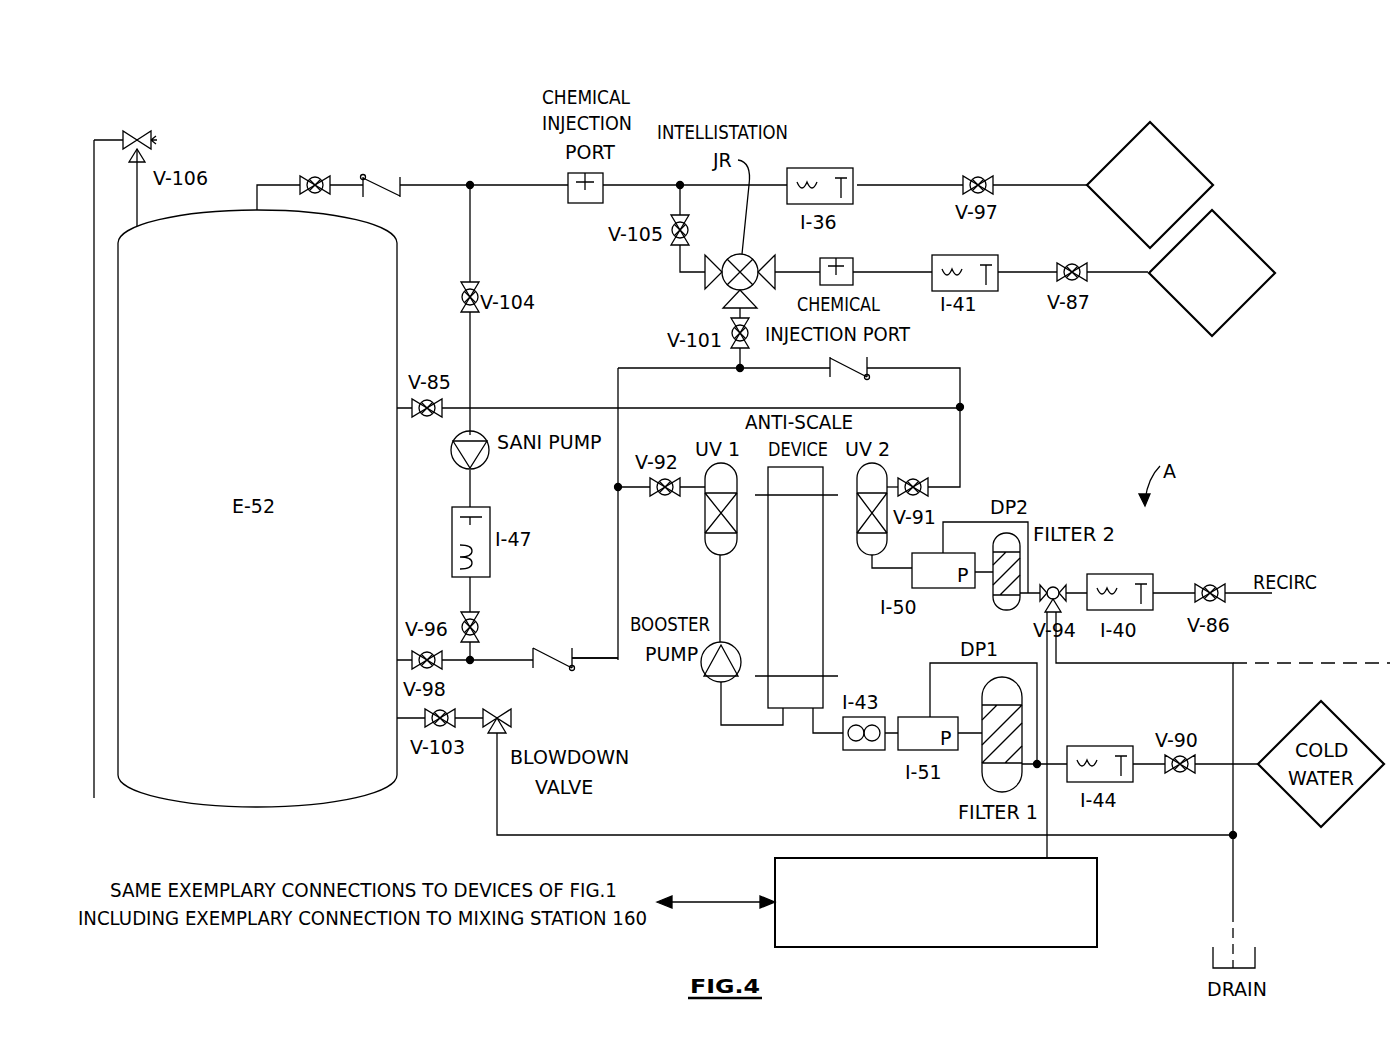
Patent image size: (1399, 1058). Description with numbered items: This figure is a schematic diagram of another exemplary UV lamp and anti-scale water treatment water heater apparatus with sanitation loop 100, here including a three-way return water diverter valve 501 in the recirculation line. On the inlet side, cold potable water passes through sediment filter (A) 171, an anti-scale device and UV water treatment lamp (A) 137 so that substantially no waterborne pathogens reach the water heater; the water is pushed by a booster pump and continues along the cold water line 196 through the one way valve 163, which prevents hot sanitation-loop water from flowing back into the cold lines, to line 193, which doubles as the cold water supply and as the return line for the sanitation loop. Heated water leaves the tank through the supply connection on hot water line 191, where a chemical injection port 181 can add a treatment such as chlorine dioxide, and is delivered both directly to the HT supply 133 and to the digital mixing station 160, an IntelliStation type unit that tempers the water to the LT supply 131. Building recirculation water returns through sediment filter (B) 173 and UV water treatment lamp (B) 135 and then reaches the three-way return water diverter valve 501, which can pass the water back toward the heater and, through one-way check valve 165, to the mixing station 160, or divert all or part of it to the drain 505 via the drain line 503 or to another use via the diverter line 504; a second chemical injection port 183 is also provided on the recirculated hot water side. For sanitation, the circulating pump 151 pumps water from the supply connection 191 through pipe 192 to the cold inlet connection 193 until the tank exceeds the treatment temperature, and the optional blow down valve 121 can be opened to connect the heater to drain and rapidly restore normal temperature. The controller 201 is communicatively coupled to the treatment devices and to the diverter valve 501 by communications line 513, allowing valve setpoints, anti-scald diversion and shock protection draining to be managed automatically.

The UV lamp and anti-scale water treatment water heater apparatus with sanitation lo 100 is at (168, 126).
The hot water line 191 is at (383, 178).
The pipe 192 is at (472, 245).
The chemical injection port 181 is at (568, 197).
The chemical injection port 183 is at (855, 262).
The digital mixing station 160 is at (705, 287).
The HT supply 133 is at (1087, 182).
The LT supply 131 is at (1150, 276).
The one-way check valve 165 is at (840, 380).
The UV water treatment lamp (B) 135 is at (903, 477).
The UV water treatment lamp (A) 137 is at (714, 556).
The circulating pump 151 is at (490, 460).
The blow down valve 121 is at (503, 712).
The one way valve 163 is at (574, 670).
The line 193 is at (468, 663).
The cold water line 196 is at (584, 655).
The sediment filter (B) 173 is at (1000, 606).
The sediment filter (A) 171 is at (990, 685).
The three-way return water diverter valve 501 is at (1053, 584).
The communications line 513 is at (1048, 708).
The drain line 503 is at (1234, 688).
The diverter line 504 is at (1335, 662).
The drain 505 is at (1255, 953).
The controller 201 is at (954, 939).